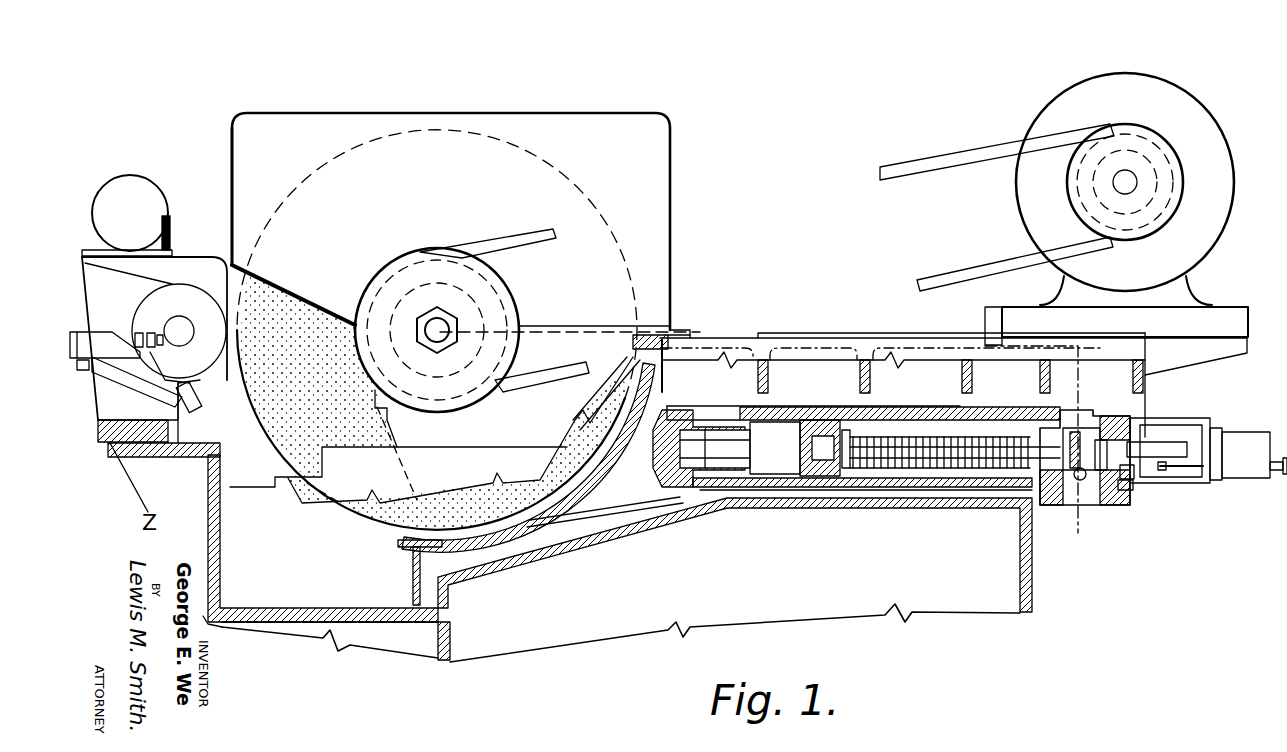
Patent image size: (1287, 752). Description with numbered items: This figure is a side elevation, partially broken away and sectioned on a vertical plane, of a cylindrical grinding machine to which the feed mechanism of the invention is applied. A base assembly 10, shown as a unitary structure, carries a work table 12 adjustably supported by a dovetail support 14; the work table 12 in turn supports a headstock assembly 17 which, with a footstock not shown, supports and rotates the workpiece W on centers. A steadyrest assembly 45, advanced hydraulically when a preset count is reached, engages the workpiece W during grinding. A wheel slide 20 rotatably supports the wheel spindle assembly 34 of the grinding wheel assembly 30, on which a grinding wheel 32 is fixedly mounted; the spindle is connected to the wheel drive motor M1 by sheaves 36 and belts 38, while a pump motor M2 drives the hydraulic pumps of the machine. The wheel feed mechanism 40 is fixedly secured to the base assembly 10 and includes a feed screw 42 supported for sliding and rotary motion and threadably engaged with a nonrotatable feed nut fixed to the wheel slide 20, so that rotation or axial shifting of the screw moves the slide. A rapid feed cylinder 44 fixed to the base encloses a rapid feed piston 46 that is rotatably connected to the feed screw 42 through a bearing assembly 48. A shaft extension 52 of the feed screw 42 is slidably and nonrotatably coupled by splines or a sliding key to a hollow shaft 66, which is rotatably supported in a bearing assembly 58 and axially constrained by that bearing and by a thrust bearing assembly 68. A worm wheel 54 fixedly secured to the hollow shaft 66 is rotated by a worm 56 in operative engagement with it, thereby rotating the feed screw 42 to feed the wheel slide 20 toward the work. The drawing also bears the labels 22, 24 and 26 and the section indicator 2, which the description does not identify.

The base assembly 10 is at (1035, 604).
The work table 12 is at (103, 397).
The dovetail support 14 is at (115, 427).
The headstock assembly 17 is at (213, 262).
The wheel slide 20 is at (786, 333).
The wheel guard housing 22 is at (592, 112).
The cover plate 24 is at (660, 363).
The guard portion 26 is at (258, 128).
The grinding wheel assembly 30 is at (461, 130).
The grinding wheel 32 is at (290, 450).
The wheel spindle assembly 34 is at (428, 337).
The sheaves 36 is at (518, 303).
The belts 38 is at (942, 157).
The wheel feed mechanism 40 is at (890, 410).
The feed screw 42 is at (945, 455).
The rapid feed cylinder 44 is at (690, 497).
The steadyrest assembly 45 is at (106, 328).
The rapid feed piston 46 is at (727, 427).
The bearing assembly 48 is at (822, 425).
The shaft extension 52 is at (1175, 440).
The worm wheel 54 is at (1105, 405).
The worm 56 is at (1108, 500).
The bearing assembly 58 is at (1130, 495).
The hollow shaft 66 is at (1145, 482).
The thrust bearing assembly 68 is at (1078, 485).
The section line 2- 2 is at (970, 308).
The wheel drive motor M1 is at (1165, 88).
The pump motor M2 is at (133, 185).
The workpiece W is at (181, 322).